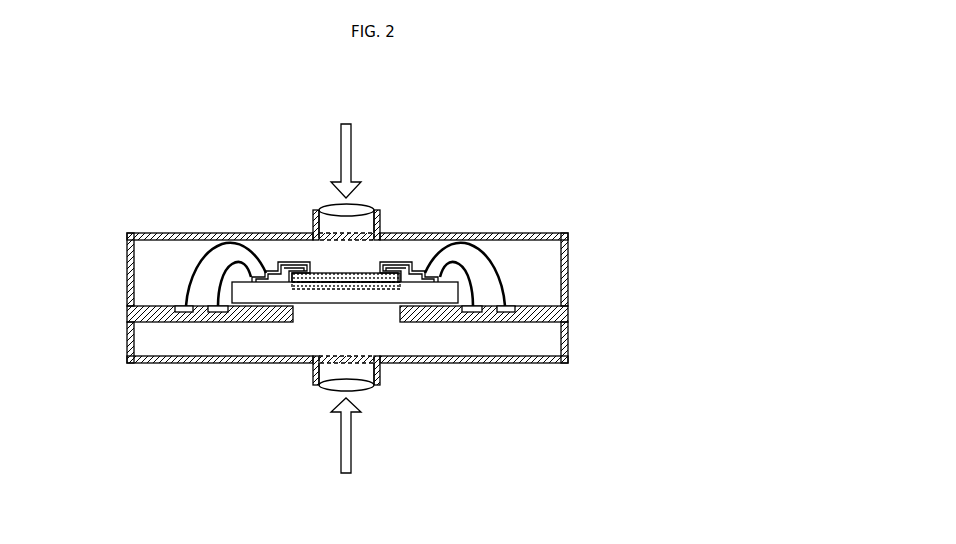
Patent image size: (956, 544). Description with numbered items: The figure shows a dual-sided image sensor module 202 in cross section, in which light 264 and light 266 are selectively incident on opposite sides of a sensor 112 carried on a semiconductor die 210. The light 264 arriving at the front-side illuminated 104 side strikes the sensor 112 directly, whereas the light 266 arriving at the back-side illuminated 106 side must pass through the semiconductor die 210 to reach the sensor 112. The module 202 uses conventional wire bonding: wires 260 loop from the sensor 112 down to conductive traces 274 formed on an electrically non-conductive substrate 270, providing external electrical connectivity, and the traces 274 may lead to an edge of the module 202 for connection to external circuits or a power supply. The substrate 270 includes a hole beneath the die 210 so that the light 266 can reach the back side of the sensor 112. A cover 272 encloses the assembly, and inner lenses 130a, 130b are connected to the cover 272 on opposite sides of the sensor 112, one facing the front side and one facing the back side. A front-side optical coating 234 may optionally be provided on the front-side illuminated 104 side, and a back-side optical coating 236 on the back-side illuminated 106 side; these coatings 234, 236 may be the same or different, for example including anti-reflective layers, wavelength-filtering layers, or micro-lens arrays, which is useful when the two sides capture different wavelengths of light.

The dual-sided image sensor module 202 is at (225, 82).
The cover 272 is at (127, 266).
The substrate 270 is at (567, 312).
The conductive traces 274 is at (506, 312).
The semiconductor die 210 is at (238, 286).
The sensor 112 is at (366, 277).
The wires 260 is at (500, 256).
The front-side illuminated side 104 is at (422, 163).
The inner lens 130a is at (368, 210).
The front-side optical coating 234 is at (335, 233).
The light 264 is at (352, 141).
The back-side illuminated side 106 is at (416, 427).
The inner lens 130b is at (368, 386).
The back-side optical coating 236 is at (333, 364).
The light 266 is at (352, 460).